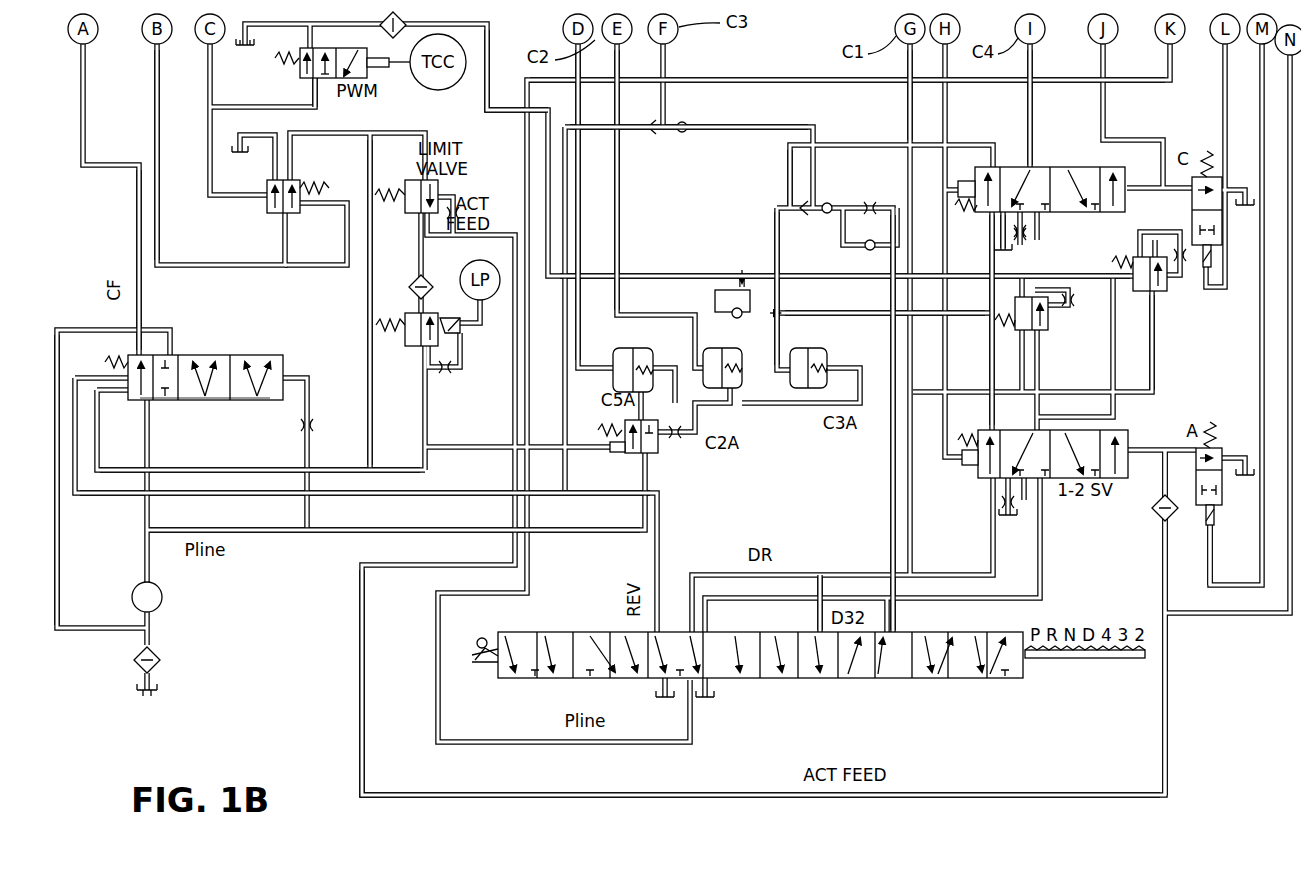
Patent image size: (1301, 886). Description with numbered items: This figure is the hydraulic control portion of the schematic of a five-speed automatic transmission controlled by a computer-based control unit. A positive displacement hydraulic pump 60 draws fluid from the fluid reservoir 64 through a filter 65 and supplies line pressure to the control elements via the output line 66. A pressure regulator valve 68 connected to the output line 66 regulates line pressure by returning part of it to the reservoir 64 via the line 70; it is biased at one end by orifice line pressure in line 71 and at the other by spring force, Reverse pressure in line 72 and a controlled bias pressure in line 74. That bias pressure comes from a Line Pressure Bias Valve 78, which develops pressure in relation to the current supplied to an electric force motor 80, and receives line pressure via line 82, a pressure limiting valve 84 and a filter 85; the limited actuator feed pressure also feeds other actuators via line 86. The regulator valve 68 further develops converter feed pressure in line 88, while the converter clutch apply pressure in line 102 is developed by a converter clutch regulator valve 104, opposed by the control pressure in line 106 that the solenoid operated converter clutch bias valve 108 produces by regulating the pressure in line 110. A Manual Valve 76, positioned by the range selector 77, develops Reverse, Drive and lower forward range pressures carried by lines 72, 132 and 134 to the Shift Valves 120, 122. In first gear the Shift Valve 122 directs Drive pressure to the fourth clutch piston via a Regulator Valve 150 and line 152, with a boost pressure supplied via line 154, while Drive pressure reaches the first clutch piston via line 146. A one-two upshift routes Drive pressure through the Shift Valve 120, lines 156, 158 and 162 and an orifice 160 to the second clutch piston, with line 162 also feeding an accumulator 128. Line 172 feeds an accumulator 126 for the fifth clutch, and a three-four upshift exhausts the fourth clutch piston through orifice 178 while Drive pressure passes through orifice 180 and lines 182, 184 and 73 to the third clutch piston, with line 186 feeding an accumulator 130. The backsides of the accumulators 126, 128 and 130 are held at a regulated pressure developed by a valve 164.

The positive displacement hydraulic pump 60 is at (163, 598).
The fluid reservoir 64 is at (153, 696).
The filter 65 is at (160, 656).
The output line 66 is at (262, 536).
The pressure regulator valve 68 is at (205, 401).
The line 70 is at (62, 557).
The line 71 is at (286, 375).
The line 72 is at (197, 492).
The line 73 is at (667, 66).
The line 74 is at (253, 469).
The Manual Valve 76 is at (820, 680).
The transmission range selector 77 is at (472, 665).
The Line Pressure Bias Valve 78 is at (405, 346).
The electric force motor 80 is at (455, 325).
The line 82 is at (369, 322).
The pressure limiting valve 84 is at (405, 210).
The filter 85 is at (409, 290).
The line 86 is at (345, 655).
The line 88 is at (137, 240).
The line 102 is at (156, 110).
The TCC Regulator Valve 104 is at (270, 215).
The line 106 is at (278, 105).
The TCC Bias Valve 108 is at (322, 82).
The line 110 is at (490, 64).
The Shift Valve 120 is at (1095, 432).
The Shift Valve 122 is at (1080, 166).
The accumulator 126 is at (638, 348).
The accumulator 128 is at (742, 384).
The accumulator 130 is at (815, 349).
The line 132 is at (820, 575).
The line 134 is at (887, 578).
The line 146 is at (908, 122).
The Regulator Valve 150 is at (1165, 296).
The line 152 is at (1028, 147).
The line 154 is at (1110, 330).
The line 156 is at (990, 360).
The line 158 is at (872, 316).
The orifice 160 is at (742, 270).
The line 162 is at (622, 215).
The valve 164 is at (652, 455).
The line 172 is at (583, 153).
The orifice 178 is at (1030, 244).
The orifice 180 is at (994, 222).
The line 182 is at (822, 150).
The line 184 is at (740, 126).
The line 186 is at (780, 228).